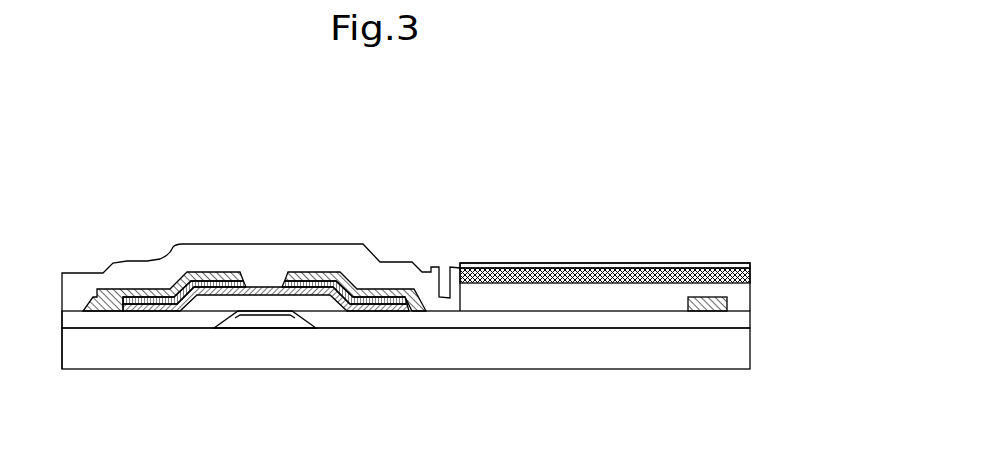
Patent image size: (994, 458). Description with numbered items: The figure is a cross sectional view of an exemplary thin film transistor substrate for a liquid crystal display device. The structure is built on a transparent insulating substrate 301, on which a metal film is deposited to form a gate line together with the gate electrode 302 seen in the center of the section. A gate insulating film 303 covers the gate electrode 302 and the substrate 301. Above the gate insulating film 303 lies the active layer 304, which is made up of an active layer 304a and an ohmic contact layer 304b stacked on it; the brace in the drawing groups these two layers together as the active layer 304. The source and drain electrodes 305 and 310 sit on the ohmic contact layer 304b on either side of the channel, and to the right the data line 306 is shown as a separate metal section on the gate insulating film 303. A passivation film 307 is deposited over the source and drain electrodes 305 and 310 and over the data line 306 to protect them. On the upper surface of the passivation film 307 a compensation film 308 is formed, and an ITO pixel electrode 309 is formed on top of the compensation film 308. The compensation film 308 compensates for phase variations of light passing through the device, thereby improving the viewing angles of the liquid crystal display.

The transparent insulating substrate 301 is at (748, 356).
The gate electrode 302 is at (264, 318).
The gate insulating film 303 is at (748, 318).
The active layer 304 is at (266, 202).
The active layer 304a is at (269, 290).
The ohmic contact layer 304b is at (214, 280).
The source electrode 305 is at (178, 247).
The drain electrode 310 is at (311, 268).
The passivation film 307 is at (521, 298).
The compensation film 308 is at (593, 280).
The ITO pixel electrode 309 is at (647, 275).
The data line 306 is at (703, 303).